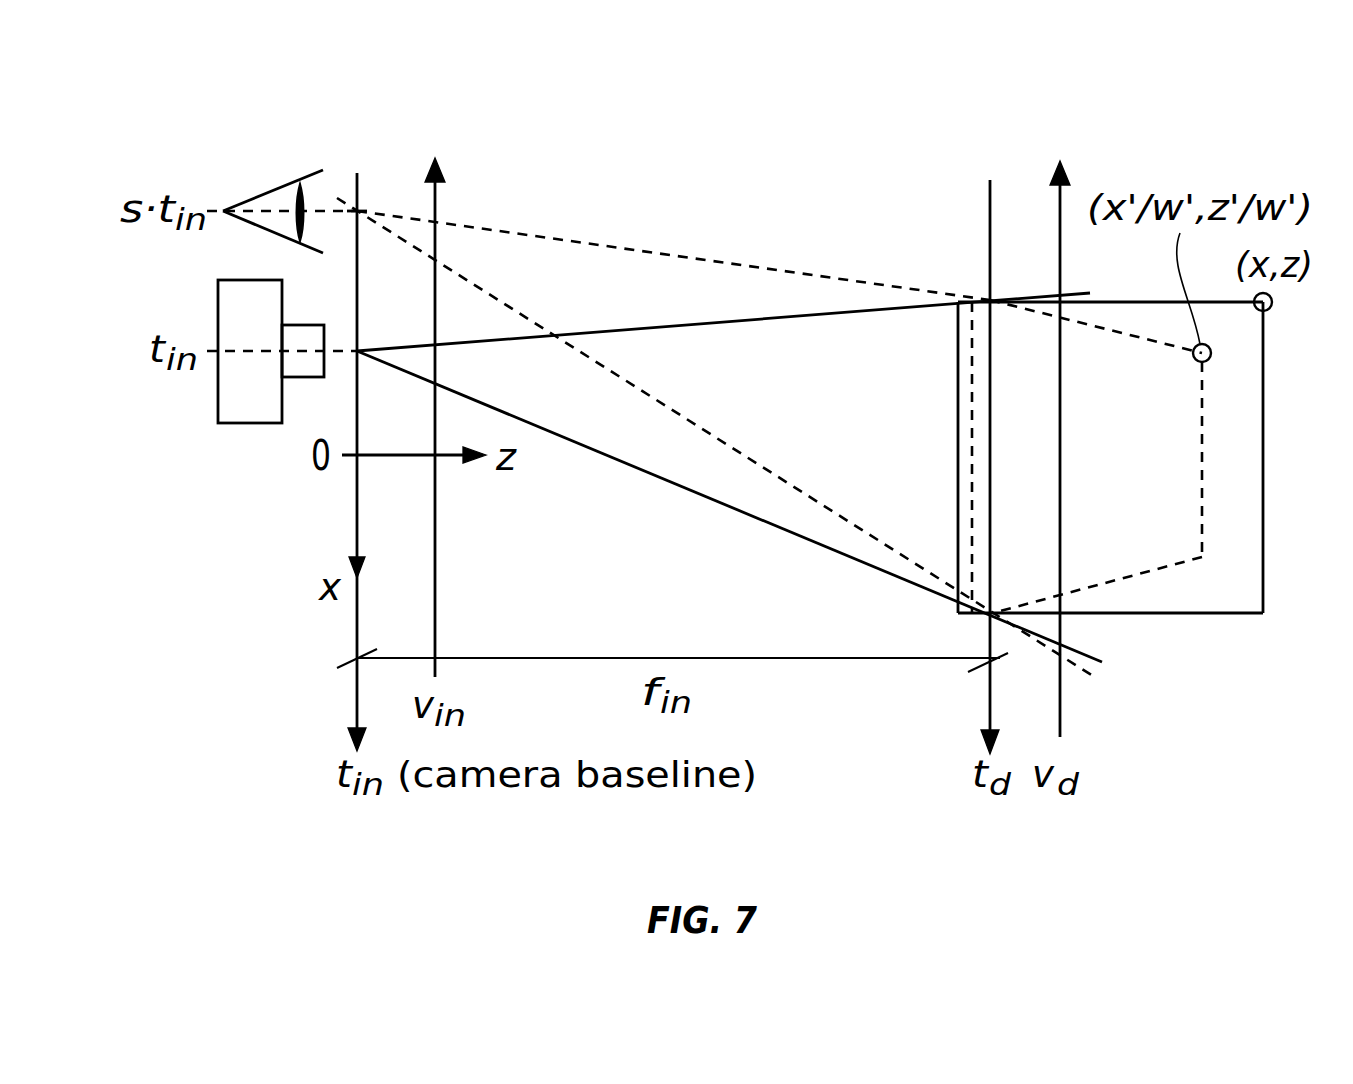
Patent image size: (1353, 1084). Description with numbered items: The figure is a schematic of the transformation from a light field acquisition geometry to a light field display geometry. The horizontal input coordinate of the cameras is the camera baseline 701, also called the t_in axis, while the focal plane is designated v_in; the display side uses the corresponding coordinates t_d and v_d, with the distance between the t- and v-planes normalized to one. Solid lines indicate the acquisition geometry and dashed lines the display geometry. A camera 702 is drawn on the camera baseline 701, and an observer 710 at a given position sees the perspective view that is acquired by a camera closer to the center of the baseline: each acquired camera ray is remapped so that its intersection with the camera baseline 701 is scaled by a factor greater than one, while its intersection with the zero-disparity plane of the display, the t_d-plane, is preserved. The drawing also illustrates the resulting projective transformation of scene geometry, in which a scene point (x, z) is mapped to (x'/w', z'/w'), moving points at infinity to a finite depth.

The camera baseline 701 is at (359, 178).
The observer 710 is at (277, 187).
The camera 702 is at (271, 351).